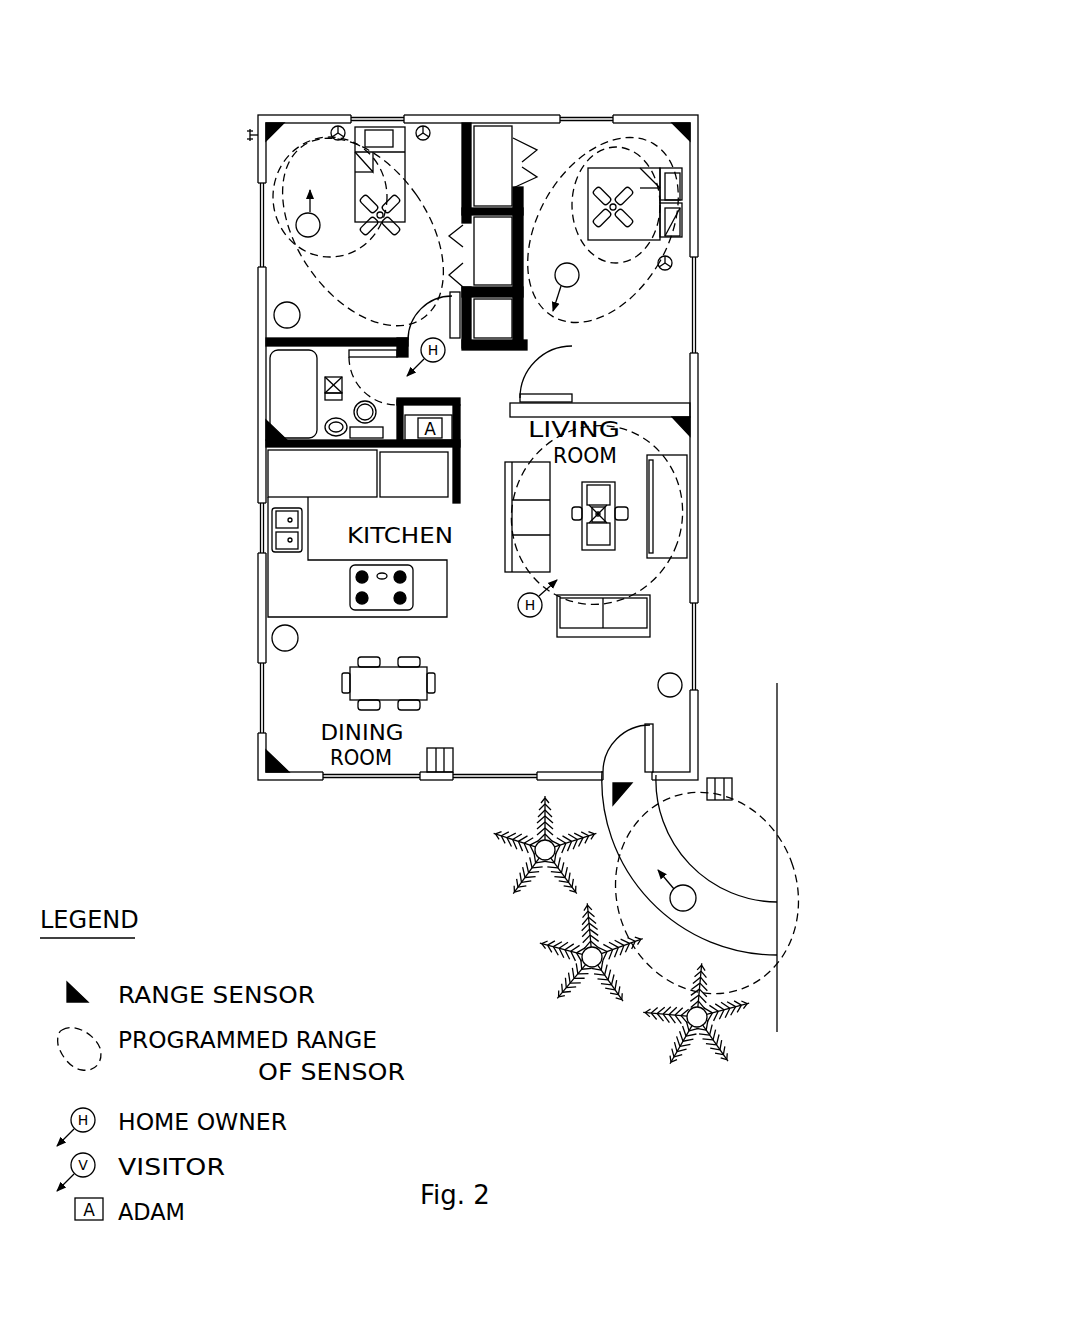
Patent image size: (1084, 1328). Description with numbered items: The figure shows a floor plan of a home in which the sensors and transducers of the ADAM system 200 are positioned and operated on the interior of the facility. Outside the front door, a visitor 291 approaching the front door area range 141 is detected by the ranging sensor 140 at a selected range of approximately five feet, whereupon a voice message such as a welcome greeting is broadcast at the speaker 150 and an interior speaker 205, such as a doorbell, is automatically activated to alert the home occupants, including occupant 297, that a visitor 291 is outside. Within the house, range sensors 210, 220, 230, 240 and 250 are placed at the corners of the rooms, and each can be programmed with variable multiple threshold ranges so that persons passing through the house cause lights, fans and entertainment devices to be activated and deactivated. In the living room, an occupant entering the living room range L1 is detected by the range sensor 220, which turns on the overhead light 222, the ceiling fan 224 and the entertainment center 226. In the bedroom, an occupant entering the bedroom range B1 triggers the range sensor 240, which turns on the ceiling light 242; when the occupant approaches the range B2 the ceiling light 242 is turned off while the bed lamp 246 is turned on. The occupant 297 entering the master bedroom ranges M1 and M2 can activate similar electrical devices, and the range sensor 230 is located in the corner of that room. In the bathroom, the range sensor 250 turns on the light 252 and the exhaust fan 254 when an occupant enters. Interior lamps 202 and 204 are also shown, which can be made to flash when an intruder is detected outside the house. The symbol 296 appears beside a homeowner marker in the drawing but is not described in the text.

The ADAM system 200 is at (166, 96).
The range sensor 240 is at (270, 125).
The bed lamp 246 is at (427, 127).
The range sensor 230 is at (684, 128).
The master bedroom range M1 is at (594, 156).
The master bedroom range M2 is at (668, 228).
The bedroom range B2 is at (281, 188).
The bedroom range B1 is at (281, 252).
The home owner 296 is at (298, 225).
The home occupant 297 is at (579, 277).
The ceiling light 242 is at (278, 316).
The exhaust fan 254 is at (323, 388).
The light 252 is at (323, 397).
The range sensor 250 is at (268, 432).
The lamp 202 is at (276, 639).
The range sensor 210 is at (268, 768).
The interior speaker 205 is at (453, 748).
The range sensor 220 is at (690, 420).
The overhead light 222 is at (612, 497).
The living room range L1 is at (677, 508).
The ceiling fan 224 is at (627, 516).
The entertainment center 226 is at (677, 544).
The lamp 204 is at (682, 685).
The ranging sensor 140 is at (630, 787).
The speaker 150 is at (733, 788).
The front door area range 141 is at (760, 833).
The visitor 291 is at (697, 899).